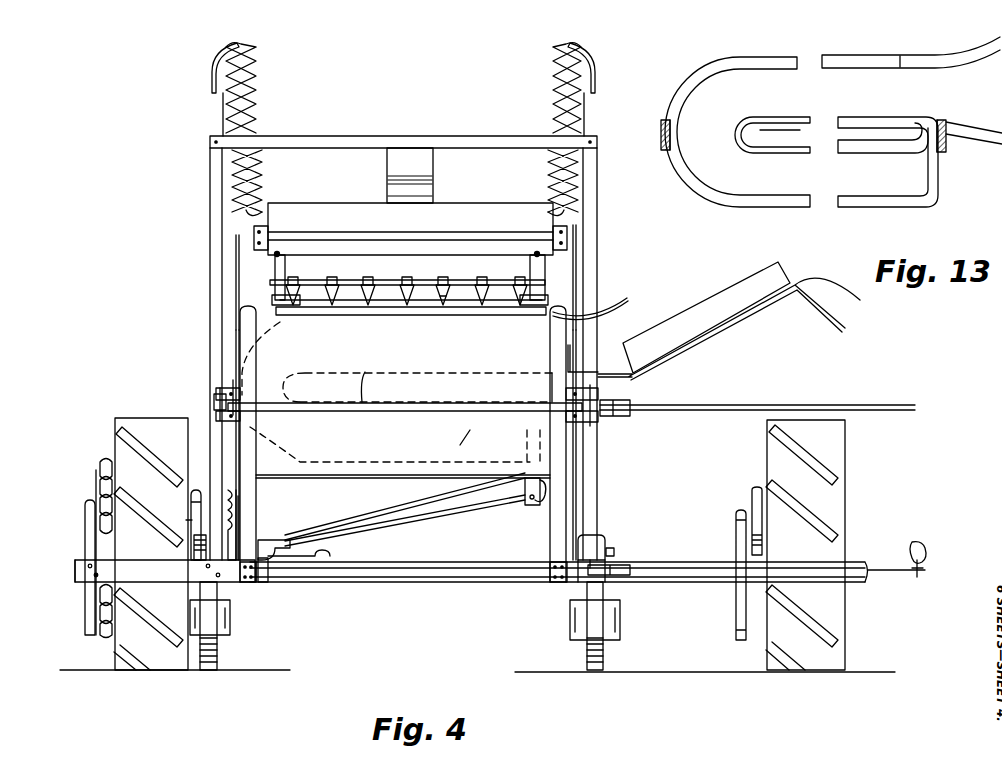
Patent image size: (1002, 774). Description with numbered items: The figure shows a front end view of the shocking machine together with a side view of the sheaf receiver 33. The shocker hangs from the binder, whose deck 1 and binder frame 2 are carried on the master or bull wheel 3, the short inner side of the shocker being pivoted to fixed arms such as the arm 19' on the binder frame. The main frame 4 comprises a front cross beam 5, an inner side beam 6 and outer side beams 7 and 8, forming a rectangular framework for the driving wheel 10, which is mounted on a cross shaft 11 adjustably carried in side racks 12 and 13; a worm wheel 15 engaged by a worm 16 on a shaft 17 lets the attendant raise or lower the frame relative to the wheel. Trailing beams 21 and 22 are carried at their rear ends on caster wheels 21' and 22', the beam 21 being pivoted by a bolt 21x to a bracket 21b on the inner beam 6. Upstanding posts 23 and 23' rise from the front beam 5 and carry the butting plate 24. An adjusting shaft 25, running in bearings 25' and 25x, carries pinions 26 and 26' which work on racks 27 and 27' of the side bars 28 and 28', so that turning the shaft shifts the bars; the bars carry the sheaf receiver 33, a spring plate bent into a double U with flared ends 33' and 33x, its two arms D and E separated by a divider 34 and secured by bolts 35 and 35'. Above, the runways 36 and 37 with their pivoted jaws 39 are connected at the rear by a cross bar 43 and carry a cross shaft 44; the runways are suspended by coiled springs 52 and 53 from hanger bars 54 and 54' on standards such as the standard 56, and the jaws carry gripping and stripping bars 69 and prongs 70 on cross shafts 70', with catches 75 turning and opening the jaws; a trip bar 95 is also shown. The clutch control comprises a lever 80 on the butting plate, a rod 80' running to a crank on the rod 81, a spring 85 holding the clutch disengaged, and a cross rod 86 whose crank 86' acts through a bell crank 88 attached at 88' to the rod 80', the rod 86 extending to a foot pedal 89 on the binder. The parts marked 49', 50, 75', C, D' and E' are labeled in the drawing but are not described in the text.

In FIG. 4, the deck 1 is at (696, 330).
In FIG. 4, the binder frame 2 is at (852, 561).
In FIG. 4, the master or bull wheel 3 is at (820, 488).
In FIG. 4, the main frame 4 is at (392, 588).
In FIG. 4, the front cross beam 5 is at (480, 582).
In FIG. 4, the inner side beam 6 is at (566, 594).
In FIG. 4, the outer side beam 7 is at (222, 584).
In FIG. 4, the outer side beam 8 is at (78, 566).
In FIG. 4, the main driving wheel 10 is at (125, 432).
In FIG. 4, the cross shaft 11 is at (95, 512).
In FIG. 4, the side rack 12 is at (86, 521).
In FIG. 4, the side rack 13 is at (192, 505).
In FIG. 4, the worm wheel 15 is at (190, 562).
In FIG. 4, the worm 16 is at (196, 540).
In FIG. 4, the shaft 17 is at (186, 520).
In FIG. 4, the fixed arm 19' is at (631, 544).
In FIG. 4, the trailing beam 21 is at (602, 532).
In FIG. 4, the caster wheel 21' is at (605, 626).
In FIG. 4, the bolt 21x is at (606, 546).
In FIG. 4, the bracket 21b is at (606, 555).
In FIG. 4, the outer trailing beam 22 is at (267, 526).
In FIG. 4, the caster wheel 22' is at (226, 626).
In FIG. 4, the upstanding post 23 is at (276, 444).
In FIG. 4, the upstanding post 23' is at (528, 444).
In FIG. 4, the butting plate 24 is at (400, 478).
In FIG. 4, the adjusting shaft 25 is at (405, 378).
In FIG. 4, the bearing 25' is at (535, 373).
In FIG. 4, the bearing 25x is at (258, 402).
In FIG. 4, the pinion 26 is at (207, 385).
In FIG. 4, the pinion 26' is at (601, 391).
In FIG. 4, the rack 27 is at (207, 404).
In FIG. 4, the rack 27' is at (594, 411).
In FIG. 4, the adjustable side bar 28 is at (199, 381).
In FIG. 13, the adjustable side bar 28 is at (654, 156).
In FIG. 4, the adjustable side bar 28' is at (595, 349).
In FIG. 13, the adjustable side bar 28' is at (957, 148).
In FIG. 4, the sheaf receiver 33 is at (411, 286).
In FIG. 13, the sheaf receiver 33 is at (832, 109).
In FIG. 4, the flared end 33' is at (595, 292).
In FIG. 13, the flared end 33' is at (974, 119).
In FIG. 4, the flared end 33x is at (640, 376).
In FIG. 4, the divider 34 is at (365, 372).
In FIG. 13, the divider 34 is at (776, 143).
In FIG. 13, the bolts 35 is at (957, 136).
In FIG. 13, the bolts 35' is at (648, 131).
In FIG. 4, the side guide or runway 36 is at (268, 232).
In FIG. 4, the side guide or runway 37 is at (553, 232).
In FIG. 4, the pivoted jaw 39 is at (262, 248).
In FIG. 4, the cross bar 43 is at (292, 212).
In FIG. 4, the cross shaft 44 is at (292, 246).
In FIG. 4, the chain 49' is at (89, 496).
In FIG. 4, the chain 50 is at (98, 540).
In FIG. 4, the coiled spring 52 is at (252, 113).
In FIG. 4, the coiled spring 53 is at (556, 112).
In FIG. 4, the hanger bar 54 is at (201, 75).
In FIG. 4, the hanger bar 54' is at (596, 68).
In FIG. 4, the side standard 56 is at (222, 268).
In FIG. 4, the combination gripping and stripping bar 69 is at (348, 292).
In FIG. 4, the prongs 70 is at (406, 311).
In FIG. 4, the cross shaft 70' is at (448, 276).
In FIG. 4, the spring pressed catch 75 is at (298, 280).
In FIG. 4, the bracket 75' is at (520, 280).
In FIG. 4, the pivoted lever 80 is at (405, 506).
In FIG. 4, the rod 80' is at (405, 520).
In FIG. 4, the lengthwise extending rod 81 is at (237, 502).
In FIG. 4, the spiral spring 85 is at (538, 502).
In FIG. 4, the cross rod 86 is at (557, 600).
In FIG. 4, the upstanding crank 86' is at (280, 580).
In FIG. 4, the bell crank 88 is at (300, 553).
In FIG. 4, the pivotal attachment 88' is at (293, 530).
In FIG. 4, the foot pedal 89 is at (917, 540).
In FIG. 4, the trip bar 95 is at (235, 250).
In FIG. 4, the block C is at (423, 178).
In FIG. 13, the arm of passage D is at (872, 51).
In FIG. 4, the part D' is at (397, 393).
In FIG. 13, the arm of passage E is at (888, 178).
In FIG. 4, the part E' is at (435, 464).